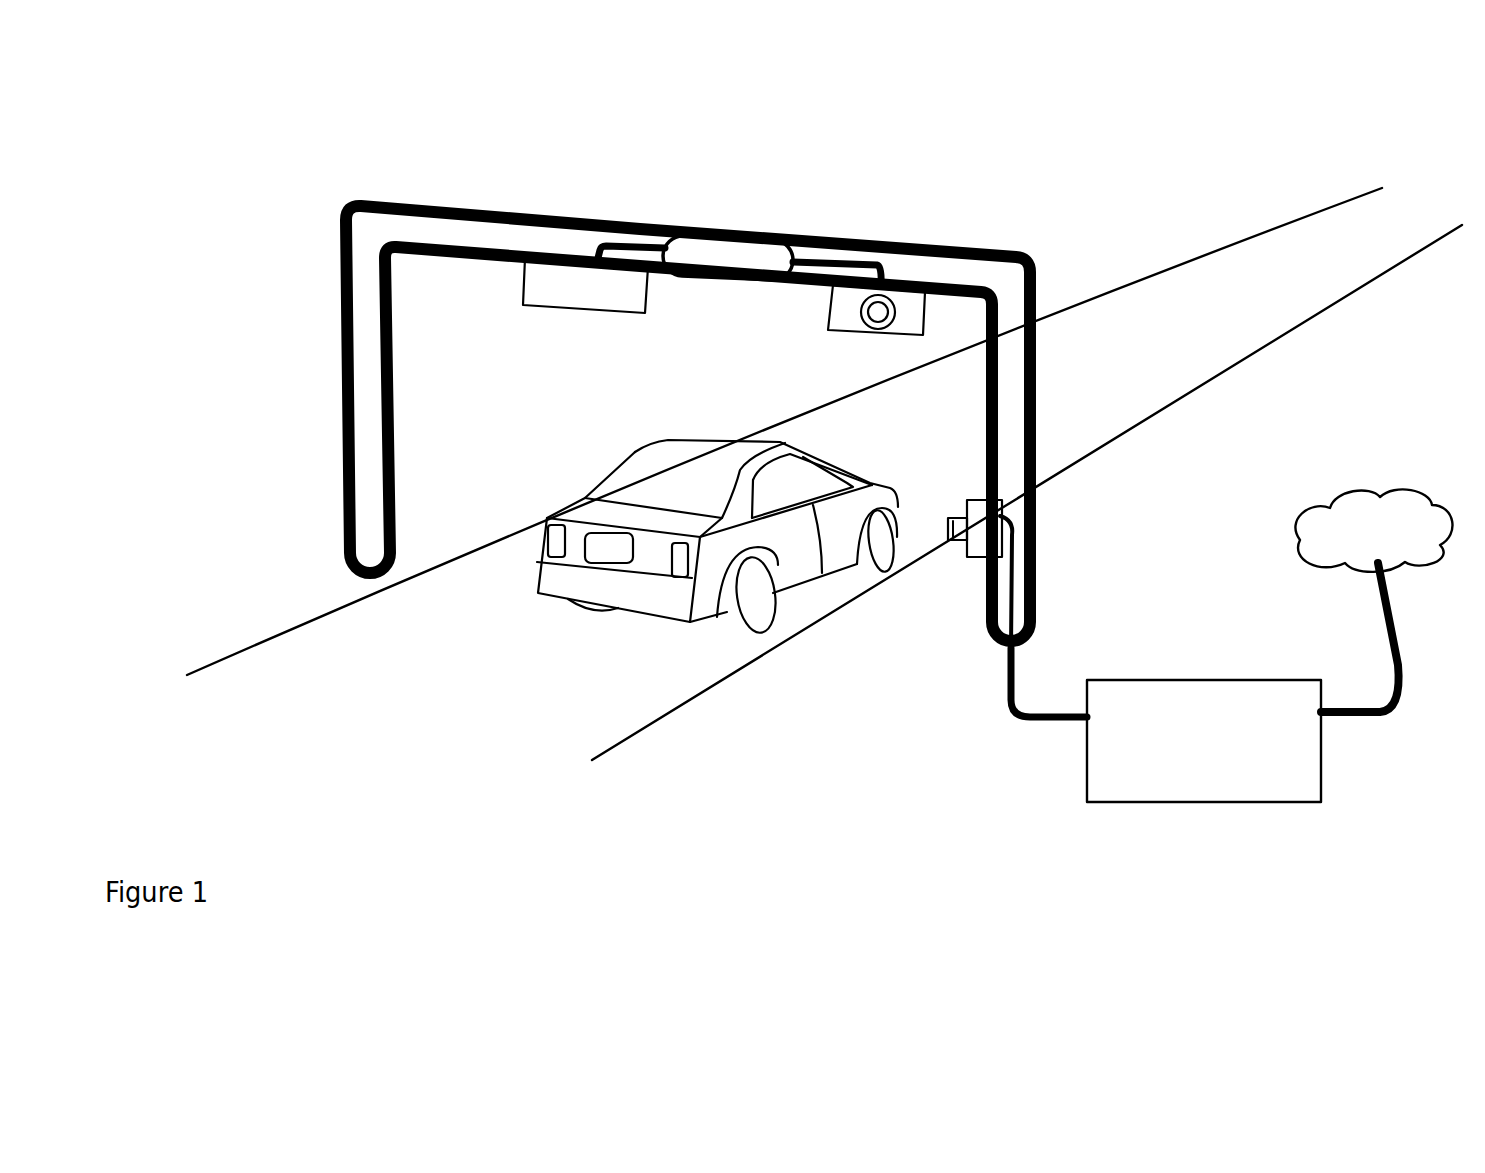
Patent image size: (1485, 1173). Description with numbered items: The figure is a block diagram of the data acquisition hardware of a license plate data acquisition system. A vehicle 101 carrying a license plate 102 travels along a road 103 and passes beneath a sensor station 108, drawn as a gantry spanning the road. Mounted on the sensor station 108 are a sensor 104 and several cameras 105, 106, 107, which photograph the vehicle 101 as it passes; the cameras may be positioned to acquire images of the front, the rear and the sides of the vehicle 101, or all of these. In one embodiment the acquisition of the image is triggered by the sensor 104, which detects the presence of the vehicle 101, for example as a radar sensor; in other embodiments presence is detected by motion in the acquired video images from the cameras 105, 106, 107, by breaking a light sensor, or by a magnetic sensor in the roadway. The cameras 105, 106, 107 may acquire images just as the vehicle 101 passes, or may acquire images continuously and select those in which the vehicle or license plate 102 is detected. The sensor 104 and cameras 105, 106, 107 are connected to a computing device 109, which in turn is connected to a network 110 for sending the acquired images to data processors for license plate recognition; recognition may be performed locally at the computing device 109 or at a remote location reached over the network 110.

The vehicle 101 is at (709, 547).
The license plate 102 is at (623, 563).
The road 103 is at (1102, 420).
The sensor 104 is at (742, 232).
The camera 105 is at (966, 557).
The camera 106 is at (908, 282).
The camera 107 is at (584, 258).
The sensor station 108 is at (348, 357).
The computing device 109 is at (1166, 725).
The network 110 is at (1373, 600).